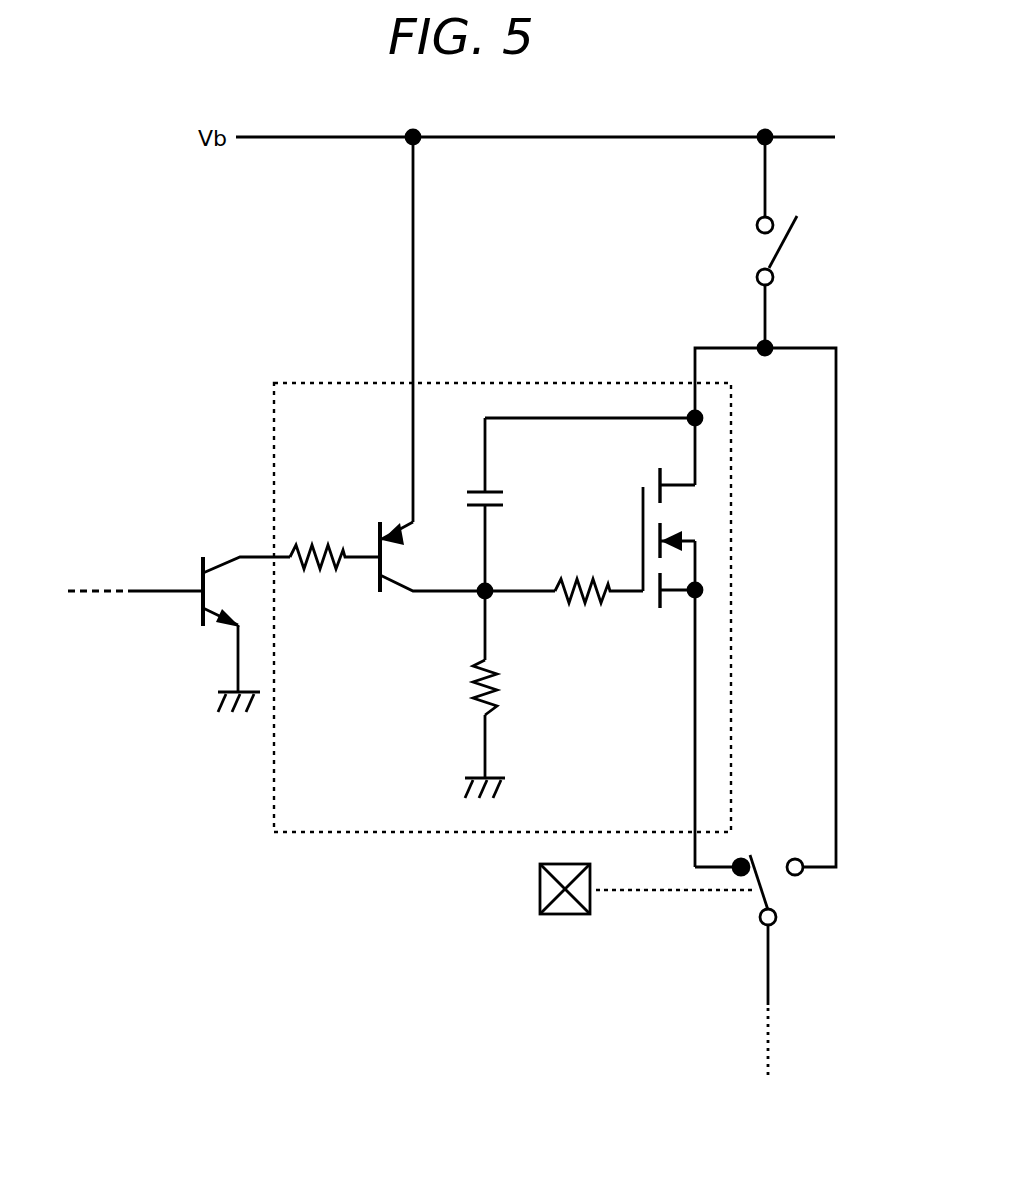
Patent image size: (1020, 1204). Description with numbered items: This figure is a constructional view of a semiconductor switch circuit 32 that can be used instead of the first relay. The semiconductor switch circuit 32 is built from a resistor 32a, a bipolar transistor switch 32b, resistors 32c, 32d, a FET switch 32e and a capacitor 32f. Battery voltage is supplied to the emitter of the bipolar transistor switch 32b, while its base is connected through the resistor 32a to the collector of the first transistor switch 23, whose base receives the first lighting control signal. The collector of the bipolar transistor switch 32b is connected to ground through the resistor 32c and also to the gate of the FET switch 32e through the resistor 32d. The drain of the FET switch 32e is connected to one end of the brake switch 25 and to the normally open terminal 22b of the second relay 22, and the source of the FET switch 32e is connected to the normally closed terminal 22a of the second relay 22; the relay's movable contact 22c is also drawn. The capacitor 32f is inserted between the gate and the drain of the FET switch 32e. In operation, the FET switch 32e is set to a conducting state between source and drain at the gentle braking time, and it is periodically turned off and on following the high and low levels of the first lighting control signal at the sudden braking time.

The second relay 22 is at (566, 916).
The normally closed terminal 22a is at (742, 860).
The normally open terminal 22b is at (800, 876).
The normally open contact 22c is at (776, 926).
The first transistor switch 23 is at (192, 626).
The brake switch 25 is at (808, 235).
The semiconductor switch circuit 32 is at (275, 383).
The resistor 32a is at (327, 548).
The bipolar transistor switch 32b is at (378, 578).
The resistor 32c is at (478, 680).
The resistor 32d is at (553, 588).
The FET switch 32e is at (634, 490).
The capacitor 32f is at (478, 491).